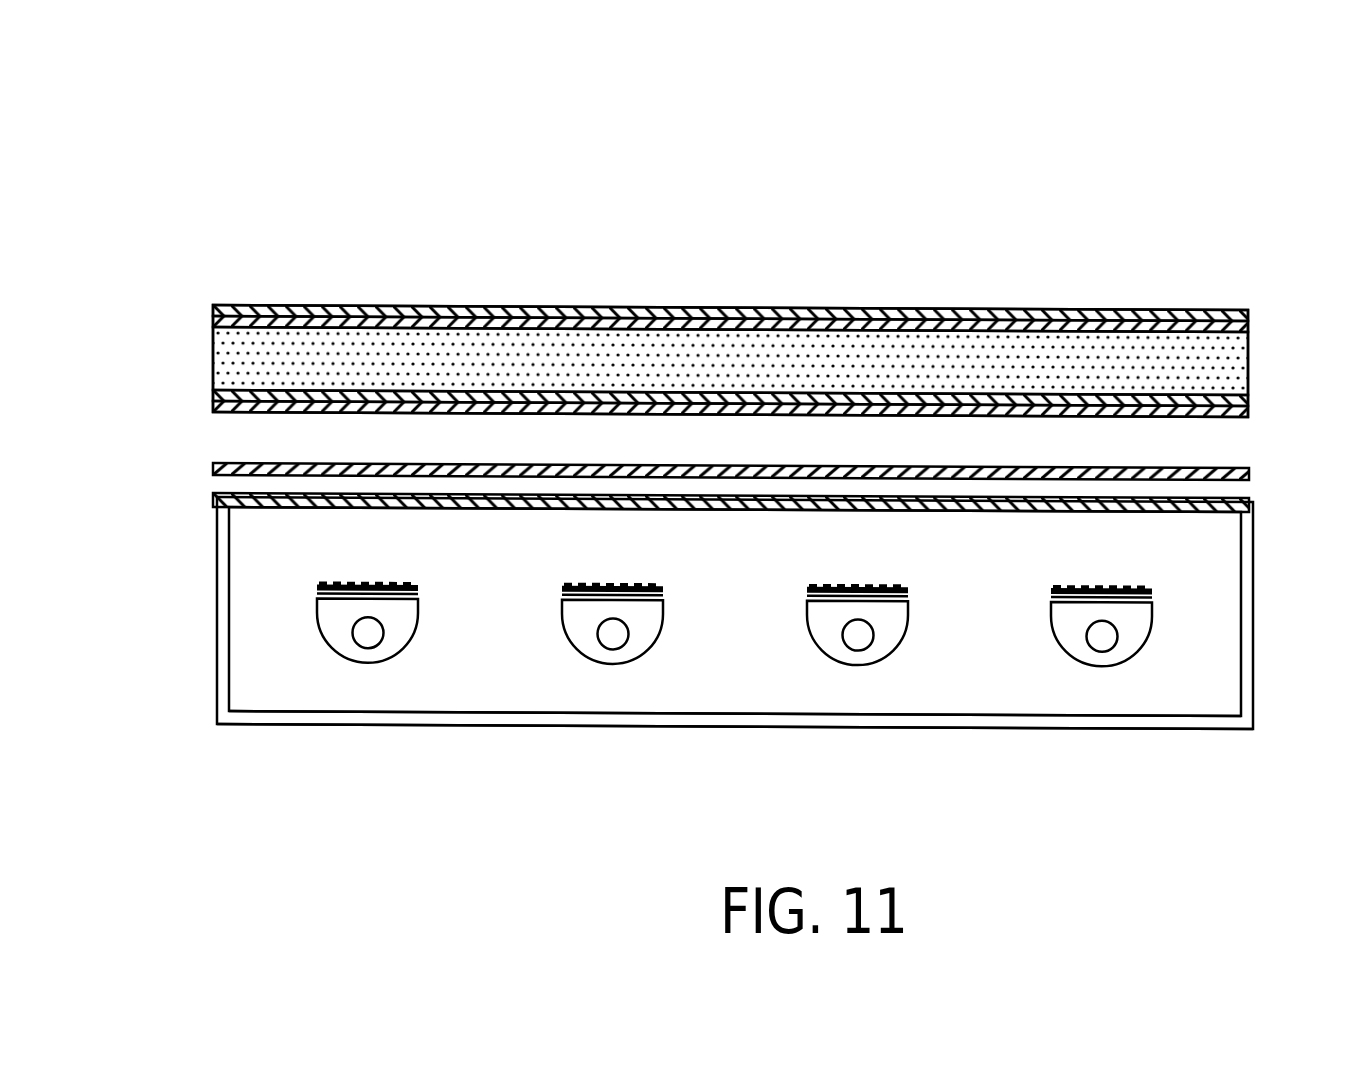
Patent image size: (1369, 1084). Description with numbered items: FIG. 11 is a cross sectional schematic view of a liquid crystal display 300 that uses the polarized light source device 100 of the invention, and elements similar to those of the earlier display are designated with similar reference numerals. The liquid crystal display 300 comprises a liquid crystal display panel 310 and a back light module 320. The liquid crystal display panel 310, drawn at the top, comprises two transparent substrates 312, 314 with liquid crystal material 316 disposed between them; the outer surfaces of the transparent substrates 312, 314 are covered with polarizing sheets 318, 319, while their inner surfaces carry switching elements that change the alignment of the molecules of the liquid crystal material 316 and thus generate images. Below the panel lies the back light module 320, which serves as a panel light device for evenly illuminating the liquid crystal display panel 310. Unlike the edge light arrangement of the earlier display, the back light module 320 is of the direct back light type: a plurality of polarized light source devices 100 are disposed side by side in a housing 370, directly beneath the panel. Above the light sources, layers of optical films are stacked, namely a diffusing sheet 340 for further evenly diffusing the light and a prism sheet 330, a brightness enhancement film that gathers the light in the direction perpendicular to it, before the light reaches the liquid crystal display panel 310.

The liquid crystal display 300 is at (112, 191).
The liquid crystal display panel 310 is at (1273, 307).
The transparent substrate 312 is at (310, 303).
The polarizing sheet 318 is at (549, 312).
The liquid crystal material 316 is at (226, 362).
The transparent substrate 314 is at (262, 396).
The polarizing sheet 319 is at (583, 406).
The prism sheet 330 is at (480, 466).
The back light module 320 is at (1275, 468).
The diffusing sheet 340 is at (705, 507).
The housing 370 is at (573, 717).
The polarized light source device 100 is at (778, 691).